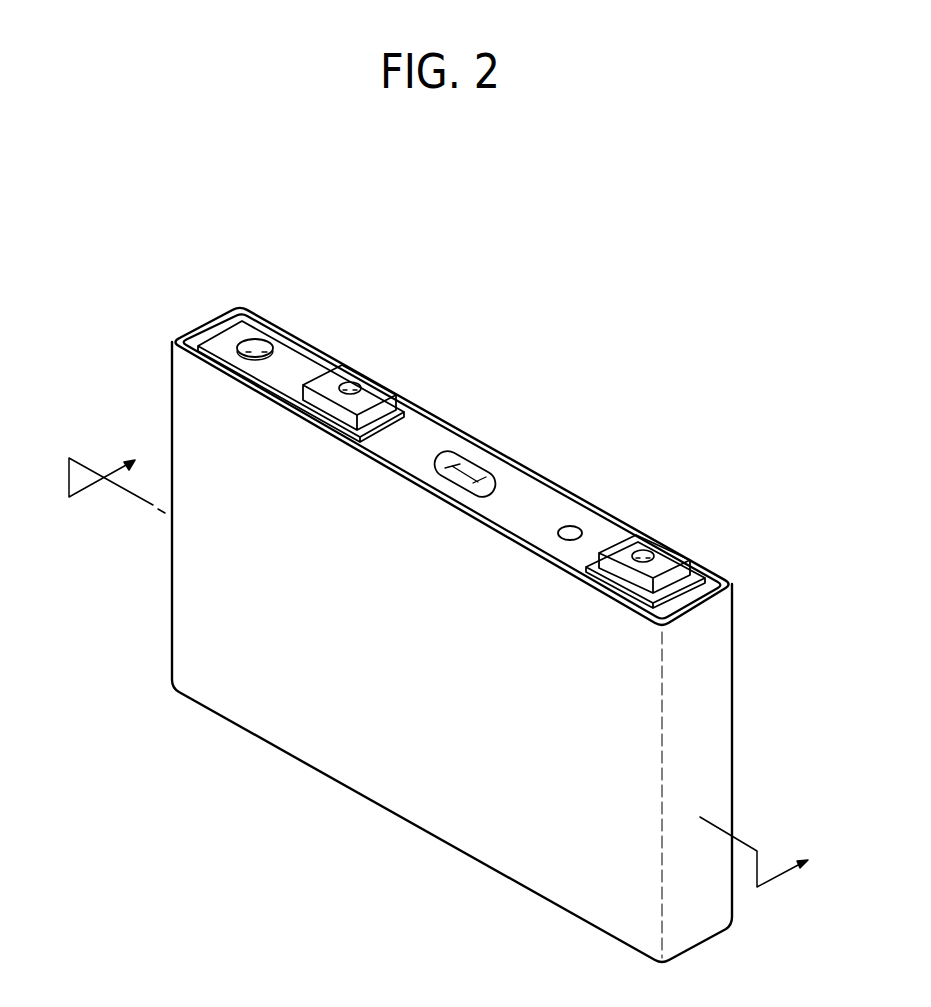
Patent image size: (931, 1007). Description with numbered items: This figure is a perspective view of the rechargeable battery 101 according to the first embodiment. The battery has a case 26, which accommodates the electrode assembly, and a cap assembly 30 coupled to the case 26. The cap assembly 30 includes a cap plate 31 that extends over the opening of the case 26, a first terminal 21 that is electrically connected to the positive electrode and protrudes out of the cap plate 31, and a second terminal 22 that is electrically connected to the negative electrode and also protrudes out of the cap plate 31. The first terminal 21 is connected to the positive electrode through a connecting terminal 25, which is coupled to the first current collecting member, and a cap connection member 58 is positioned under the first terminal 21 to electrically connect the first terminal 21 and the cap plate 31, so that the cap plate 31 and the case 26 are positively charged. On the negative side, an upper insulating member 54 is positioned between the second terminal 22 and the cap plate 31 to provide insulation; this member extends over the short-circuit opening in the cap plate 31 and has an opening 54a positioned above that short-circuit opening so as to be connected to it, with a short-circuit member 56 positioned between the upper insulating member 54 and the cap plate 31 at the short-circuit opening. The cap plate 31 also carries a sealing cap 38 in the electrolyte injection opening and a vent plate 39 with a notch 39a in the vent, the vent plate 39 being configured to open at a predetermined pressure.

The rechargeable battery 101 is at (508, 267).
The case 26 is at (390, 785).
The cap assembly 30 is at (547, 486).
The cap plate 31 is at (427, 435).
The cap connection member 58 is at (700, 548).
The upper insulating member 54 is at (298, 360).
The opening 54a is at (240, 340).
The short-circuit member 56 is at (260, 348).
The second terminal 22 is at (370, 392).
The first terminal 21 is at (663, 557).
The connecting terminal 25 is at (348, 386).
The vent plate 39 is at (463, 455).
The notch 39a is at (477, 477).
The sealing cap 38 is at (570, 530).